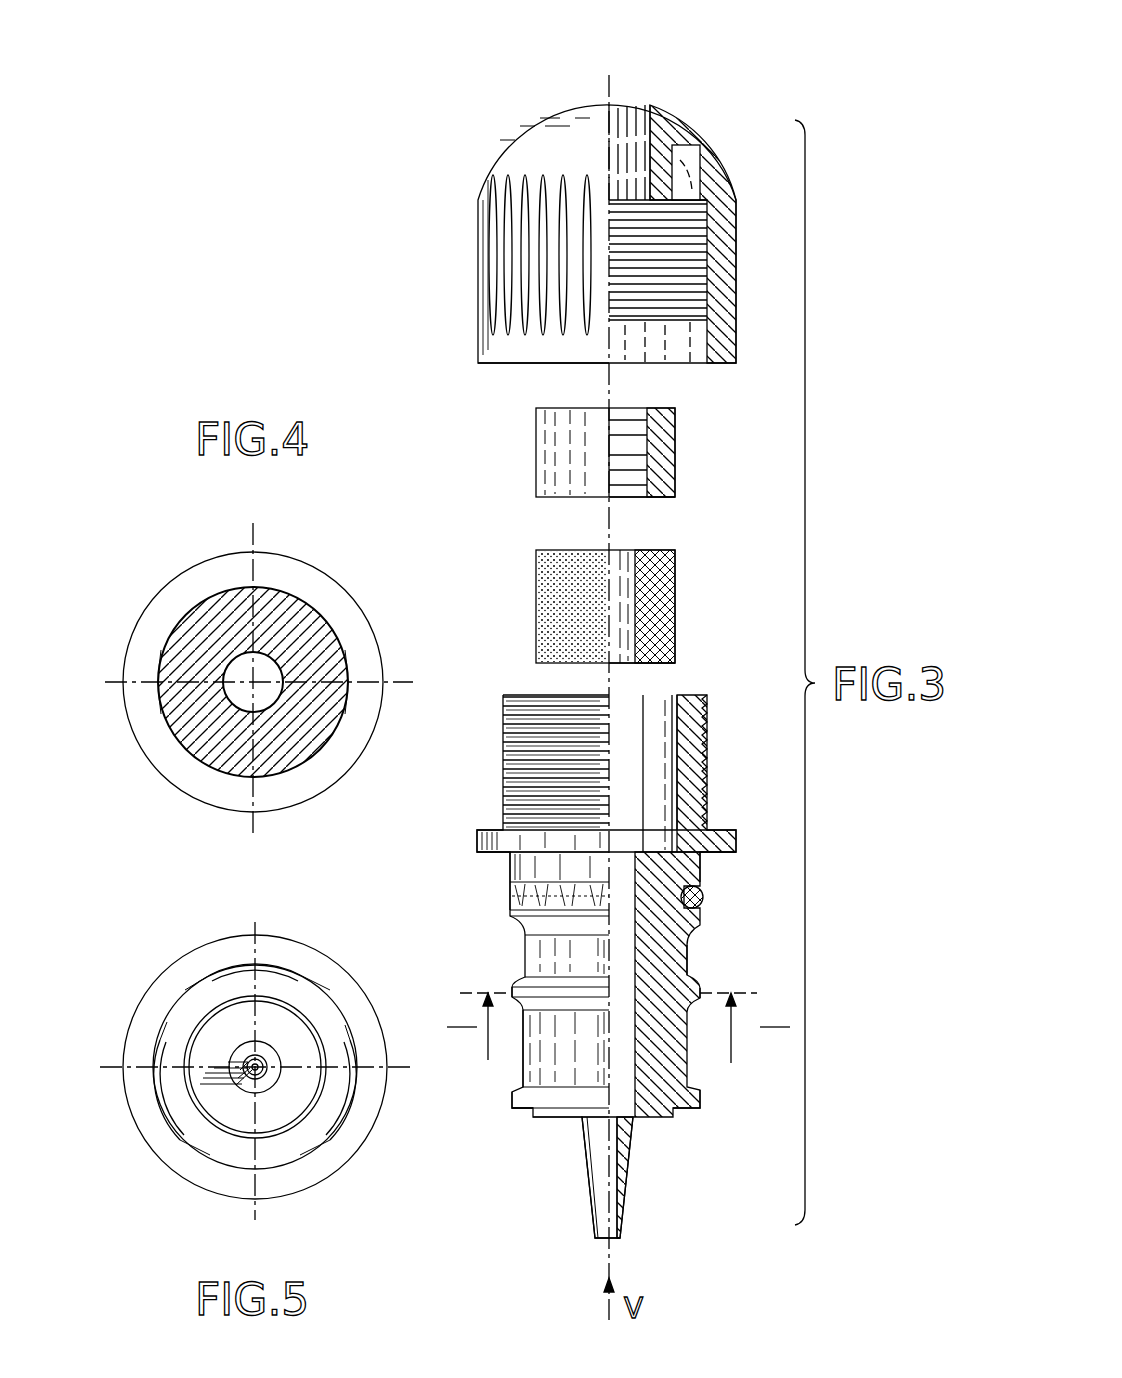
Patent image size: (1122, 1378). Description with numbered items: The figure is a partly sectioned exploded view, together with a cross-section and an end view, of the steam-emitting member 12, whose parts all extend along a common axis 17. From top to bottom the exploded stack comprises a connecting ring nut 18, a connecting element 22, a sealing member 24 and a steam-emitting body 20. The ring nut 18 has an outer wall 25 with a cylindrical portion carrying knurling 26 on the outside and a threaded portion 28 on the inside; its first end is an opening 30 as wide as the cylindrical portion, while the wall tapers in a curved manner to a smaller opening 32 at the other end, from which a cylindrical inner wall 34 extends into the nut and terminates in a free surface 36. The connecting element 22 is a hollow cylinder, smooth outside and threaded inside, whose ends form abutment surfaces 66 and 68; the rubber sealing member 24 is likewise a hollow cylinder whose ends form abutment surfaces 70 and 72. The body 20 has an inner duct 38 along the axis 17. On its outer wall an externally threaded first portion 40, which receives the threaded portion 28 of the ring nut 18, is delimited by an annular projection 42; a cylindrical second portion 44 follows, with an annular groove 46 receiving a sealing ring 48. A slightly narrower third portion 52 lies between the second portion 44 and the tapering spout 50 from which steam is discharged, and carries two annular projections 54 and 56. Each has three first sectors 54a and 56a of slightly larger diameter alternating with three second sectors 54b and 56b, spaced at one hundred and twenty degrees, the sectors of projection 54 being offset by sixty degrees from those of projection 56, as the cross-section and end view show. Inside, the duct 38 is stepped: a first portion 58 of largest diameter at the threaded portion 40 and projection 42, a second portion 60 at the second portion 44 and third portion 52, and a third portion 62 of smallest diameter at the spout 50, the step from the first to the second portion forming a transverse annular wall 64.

In FIG. 3, the steam-emitting member 12 is at (415, 212).
In FIG. 3, the axis 17 is at (608, 95).
In FIG. 3, the connecting ring nut 18 is at (584, 216).
In FIG. 3, the steam-emitting body 20 is at (602, 944).
In FIG. 3, the connecting element 22 is at (578, 451).
In FIG. 3, the sealing member 24 is at (602, 584).
In FIG. 3, the outer wall 25 is at (735, 275).
In FIG. 3, the knurling 26 is at (495, 205).
In FIG. 3, the threaded portion 28 is at (667, 295).
In FIG. 3, the opening 30 is at (500, 365).
In FIG. 3, the opening 32 is at (615, 105).
In FIG. 3, the inner wall 34 is at (657, 157).
In FIG. 3, the free surface 36 is at (655, 205).
In FIG. 3, the inner duct 38 is at (645, 720).
In FIG. 3, the first portion 40 is at (507, 775).
In FIG. 3, the annular projection 42 is at (478, 840).
In FIG. 3, the second portion 44 is at (512, 863).
In FIG. 3, the annular groove 46 is at (705, 893).
In FIG. 3, the sealing ring 48 is at (513, 890).
In FIG. 3, the spout 50 is at (593, 1160).
In FIG. 5, the spout 50 is at (247, 1087).
In FIG. 3, the third portion 52 is at (523, 1056).
In FIG. 3, the annular projection 54 is at (700, 992).
In FIG. 4, the first sectors 54a is at (277, 593).
In FIG. 5, the first sectors 54a is at (295, 973).
In FIG. 4, the second sectors 54b is at (223, 617).
In FIG. 3, the annular projection 56 is at (708, 1092).
In FIG. 5, the annular projection 56 is at (193, 1013).
In FIG. 5, the first sectors 56a is at (212, 972).
In FIG. 5, the second sectors 56b is at (300, 1005).
In FIG. 3, the first portion 58 is at (662, 763).
In FIG. 3, the second portion 60 is at (687, 938).
In FIG. 3, the third portion 62 is at (620, 1177).
In FIG. 3, the annular wall 64 is at (628, 847).
In FIG. 3, the abutment surface 66 is at (660, 408).
In FIG. 3, the abutment surface 68 is at (653, 497).
In FIG. 3, the abutment surface 70 is at (652, 553).
In FIG. 3, the abutment surface 72 is at (653, 663).